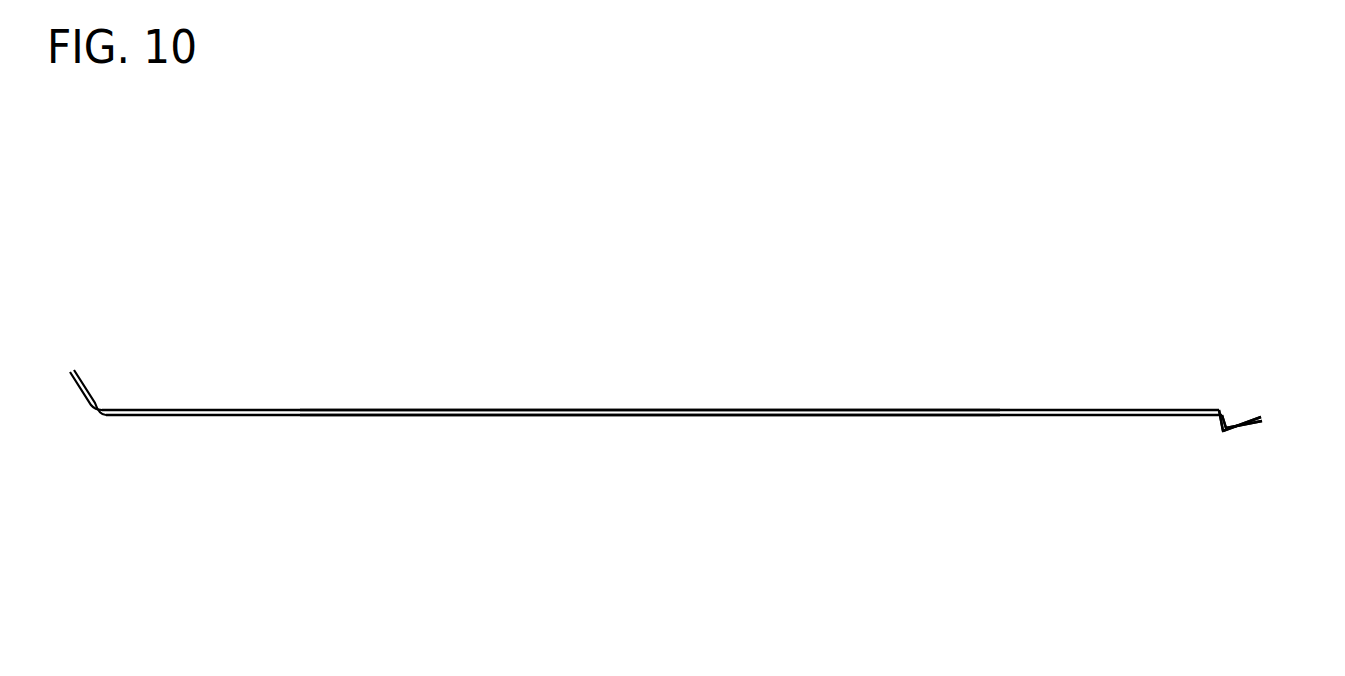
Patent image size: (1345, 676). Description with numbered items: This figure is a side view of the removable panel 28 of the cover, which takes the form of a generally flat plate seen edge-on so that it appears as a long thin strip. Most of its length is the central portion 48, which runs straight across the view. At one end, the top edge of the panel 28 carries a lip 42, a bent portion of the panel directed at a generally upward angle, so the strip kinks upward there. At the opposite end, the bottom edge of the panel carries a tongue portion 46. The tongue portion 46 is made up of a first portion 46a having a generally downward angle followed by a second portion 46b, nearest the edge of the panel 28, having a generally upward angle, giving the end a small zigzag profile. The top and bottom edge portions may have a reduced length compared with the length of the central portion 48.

The panel 28 is at (425, 490).
The lip 42 is at (78, 388).
The tongue portion 46 is at (1235, 453).
The first portion 46a is at (1218, 422).
The second portion 46b is at (1255, 427).
The central portion 48 is at (685, 418).